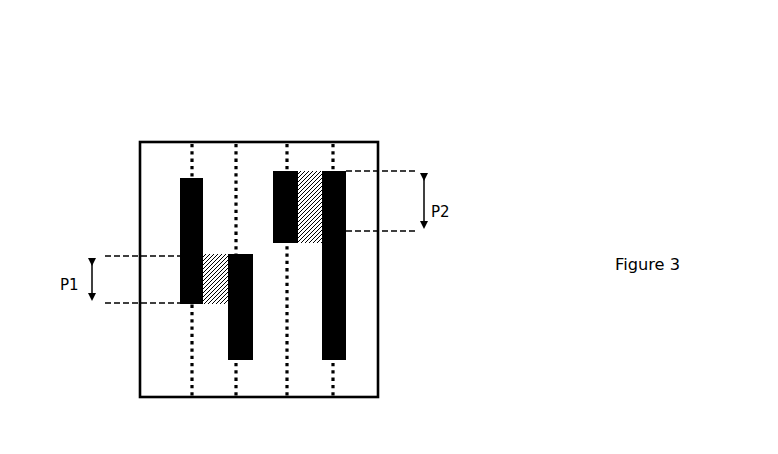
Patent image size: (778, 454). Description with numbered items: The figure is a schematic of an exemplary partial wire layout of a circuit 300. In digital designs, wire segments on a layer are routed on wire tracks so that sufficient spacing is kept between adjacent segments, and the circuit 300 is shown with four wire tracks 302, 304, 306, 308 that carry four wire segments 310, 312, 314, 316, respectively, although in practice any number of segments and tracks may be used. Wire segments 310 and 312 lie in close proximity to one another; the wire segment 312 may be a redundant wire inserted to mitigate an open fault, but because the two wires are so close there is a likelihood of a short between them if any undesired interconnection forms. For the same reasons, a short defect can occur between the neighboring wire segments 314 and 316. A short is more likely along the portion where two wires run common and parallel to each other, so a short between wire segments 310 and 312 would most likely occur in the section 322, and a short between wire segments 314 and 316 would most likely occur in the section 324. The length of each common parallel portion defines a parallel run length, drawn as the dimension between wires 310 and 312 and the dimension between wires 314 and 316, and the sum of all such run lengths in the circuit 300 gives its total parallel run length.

The circuit 300 is at (72, 60).
The wire track 302 is at (193, 157).
The wire track 304 is at (237, 157).
The wire track 306 is at (288, 157).
The wire track 308 is at (334, 157).
The wire segment 310 is at (180, 230).
The wire segment 312 is at (250, 362).
The wire segment 314 is at (273, 170).
The wire segment 316 is at (346, 330).
The section 322 is at (211, 305).
The section 324 is at (308, 245).